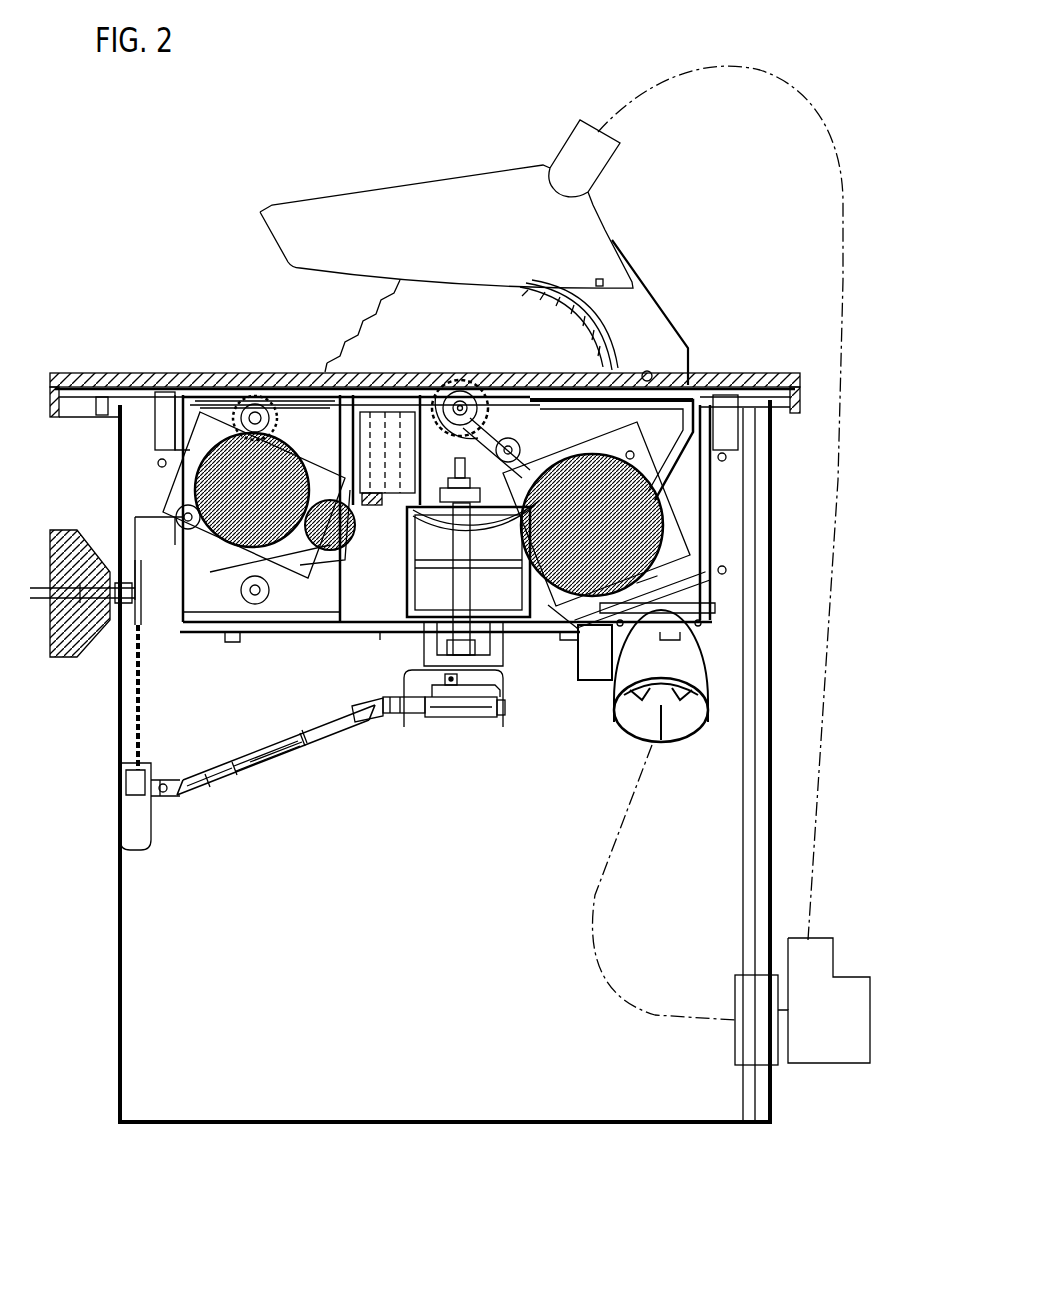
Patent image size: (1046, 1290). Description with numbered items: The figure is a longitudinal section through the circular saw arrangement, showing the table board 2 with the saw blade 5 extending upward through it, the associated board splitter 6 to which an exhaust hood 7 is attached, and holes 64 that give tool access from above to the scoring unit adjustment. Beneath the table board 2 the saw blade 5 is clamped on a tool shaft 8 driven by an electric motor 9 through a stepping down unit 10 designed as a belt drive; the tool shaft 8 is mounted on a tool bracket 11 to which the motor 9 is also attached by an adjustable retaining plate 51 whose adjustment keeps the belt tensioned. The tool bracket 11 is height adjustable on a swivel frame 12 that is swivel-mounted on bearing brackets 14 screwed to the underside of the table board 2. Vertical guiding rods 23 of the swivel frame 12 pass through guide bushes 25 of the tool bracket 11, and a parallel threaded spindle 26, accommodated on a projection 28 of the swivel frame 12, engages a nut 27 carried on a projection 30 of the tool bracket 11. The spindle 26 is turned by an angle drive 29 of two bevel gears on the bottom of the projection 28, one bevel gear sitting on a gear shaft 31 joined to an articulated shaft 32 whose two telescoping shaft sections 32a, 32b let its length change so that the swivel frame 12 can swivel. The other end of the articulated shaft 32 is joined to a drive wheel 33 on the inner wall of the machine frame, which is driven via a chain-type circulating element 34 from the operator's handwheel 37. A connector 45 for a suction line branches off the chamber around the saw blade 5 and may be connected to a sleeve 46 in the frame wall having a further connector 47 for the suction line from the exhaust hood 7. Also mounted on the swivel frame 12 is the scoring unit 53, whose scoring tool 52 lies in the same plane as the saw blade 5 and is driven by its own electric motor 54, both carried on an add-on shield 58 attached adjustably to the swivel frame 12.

The table board 2 is at (82, 372).
The saw blade 5 is at (385, 310).
The board splitter 6 is at (635, 340).
The exhaust hood 7 is at (447, 215).
The tool shaft 8 is at (545, 420).
The electric motor 9 is at (613, 497).
The stepping down unit 10 is at (593, 330).
The tool bracket 11 is at (335, 415).
The swivel frame 12 is at (287, 633).
The bearing brackets 14 is at (160, 388).
The guiding rods 23 is at (377, 718).
The guide bushes 25 is at (348, 700).
The threaded spindle 26 is at (463, 570).
The nut 27 is at (432, 400).
The projection 28 is at (500, 647).
The angle drive 29 is at (451, 725).
The projection 30 is at (338, 395).
The gear shaft 31 is at (480, 718).
The articulated shaft 32 is at (287, 757).
The shaft section 32a is at (297, 753).
The shaft section 32b is at (217, 780).
The drive wheel 33 is at (120, 762).
The circulating element 34 is at (137, 717).
The handwheel 37 is at (63, 658).
The connector 45 is at (667, 660).
The sleeve 46 is at (738, 1042).
The further connector 47 is at (807, 955).
The retaining plate 51 is at (663, 557).
The scoring tool 52 is at (250, 372).
The scoring unit 53 is at (182, 470).
The electric motor 54 is at (226, 512).
The add-on shield 58 is at (270, 583).
The holes 64 is at (208, 385).